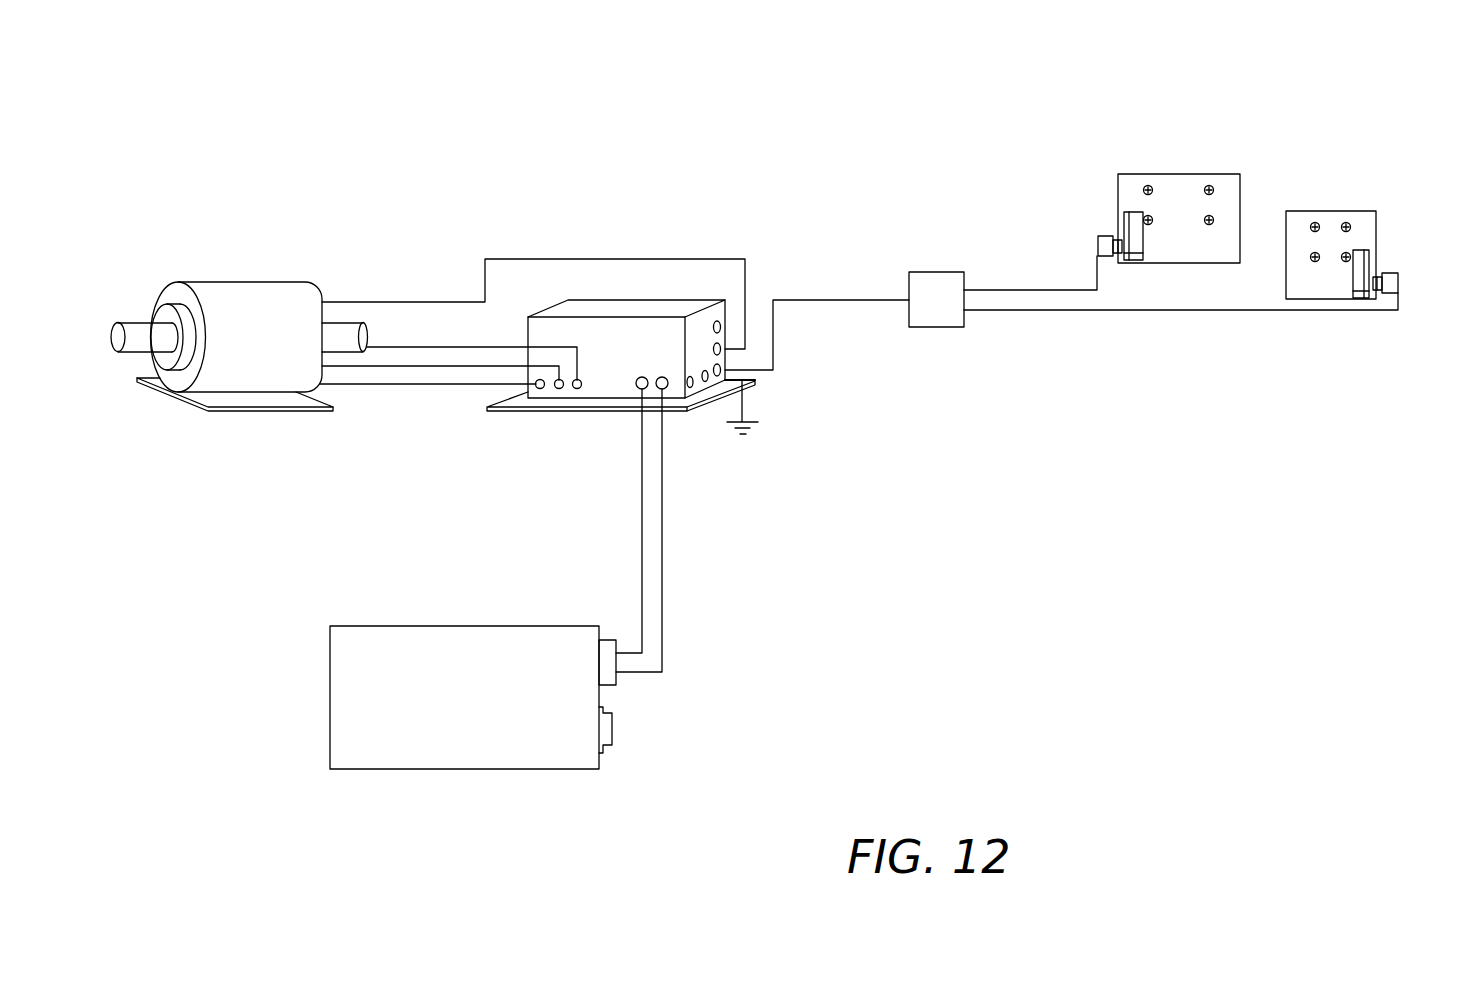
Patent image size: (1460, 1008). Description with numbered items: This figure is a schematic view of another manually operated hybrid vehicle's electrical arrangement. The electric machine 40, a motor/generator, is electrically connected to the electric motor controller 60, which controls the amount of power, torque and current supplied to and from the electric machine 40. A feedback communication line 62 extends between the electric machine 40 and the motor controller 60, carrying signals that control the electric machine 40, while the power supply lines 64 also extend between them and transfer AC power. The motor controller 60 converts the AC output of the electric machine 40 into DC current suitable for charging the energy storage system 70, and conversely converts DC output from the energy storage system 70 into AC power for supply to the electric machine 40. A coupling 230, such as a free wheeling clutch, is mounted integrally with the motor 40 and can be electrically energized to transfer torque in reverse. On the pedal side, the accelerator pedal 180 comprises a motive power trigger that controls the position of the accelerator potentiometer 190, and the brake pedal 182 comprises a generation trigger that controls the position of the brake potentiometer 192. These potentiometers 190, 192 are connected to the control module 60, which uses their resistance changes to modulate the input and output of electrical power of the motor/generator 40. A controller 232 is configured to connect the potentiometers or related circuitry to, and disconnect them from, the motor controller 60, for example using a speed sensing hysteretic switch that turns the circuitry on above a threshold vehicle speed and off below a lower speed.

The electric machine 40 is at (230, 292).
The coupling 230 is at (167, 313).
The feedback communication line 62 is at (417, 302).
The power supply lines 64 is at (382, 348).
The electric motor controller 60 is at (632, 310).
The controller 232 is at (930, 293).
The brake potentiometer 192 is at (1097, 236).
The brake pedal 182 is at (1142, 138).
The accelerator pedal 180 is at (1323, 185).
The accelerator potentiometer 190 is at (1398, 272).
The energy storage system 70 is at (468, 732).